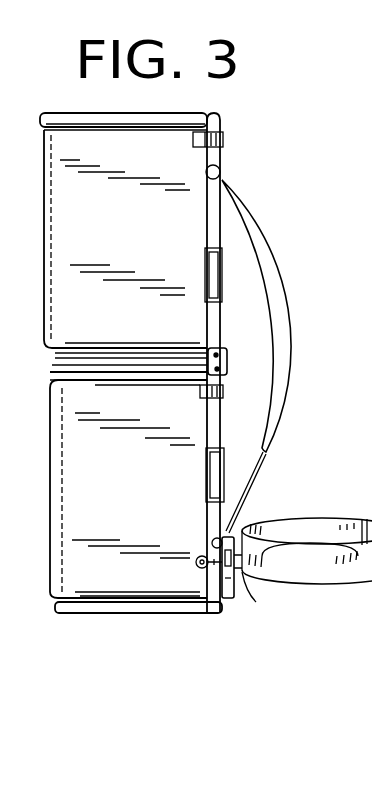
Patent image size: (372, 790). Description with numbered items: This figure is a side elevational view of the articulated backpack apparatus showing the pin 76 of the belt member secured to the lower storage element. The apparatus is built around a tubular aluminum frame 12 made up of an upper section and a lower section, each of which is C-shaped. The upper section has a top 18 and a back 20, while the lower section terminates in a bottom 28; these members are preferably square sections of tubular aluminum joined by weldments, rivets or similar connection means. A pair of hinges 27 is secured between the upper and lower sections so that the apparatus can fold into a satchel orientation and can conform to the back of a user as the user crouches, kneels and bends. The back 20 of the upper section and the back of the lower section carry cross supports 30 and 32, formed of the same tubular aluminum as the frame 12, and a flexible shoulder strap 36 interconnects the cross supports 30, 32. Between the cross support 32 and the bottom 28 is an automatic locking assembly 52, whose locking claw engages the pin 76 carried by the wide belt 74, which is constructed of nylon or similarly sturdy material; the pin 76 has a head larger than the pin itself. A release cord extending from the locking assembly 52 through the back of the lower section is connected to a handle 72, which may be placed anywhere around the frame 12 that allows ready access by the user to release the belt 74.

The tubular aluminum frame 12 is at (235, 318).
The top 18 is at (88, 115).
The back 20 is at (222, 158).
The hinges 27 is at (227, 360).
The bottom 28 is at (115, 613).
The cross support 30 is at (221, 172).
The cross support 32 is at (228, 528).
The flexible shoulder strap 36 is at (270, 234).
The automatic locking assembly 52 is at (237, 590).
The handle 72 is at (200, 568).
The wide belt 74 is at (317, 582).
The pin 76 is at (236, 563).